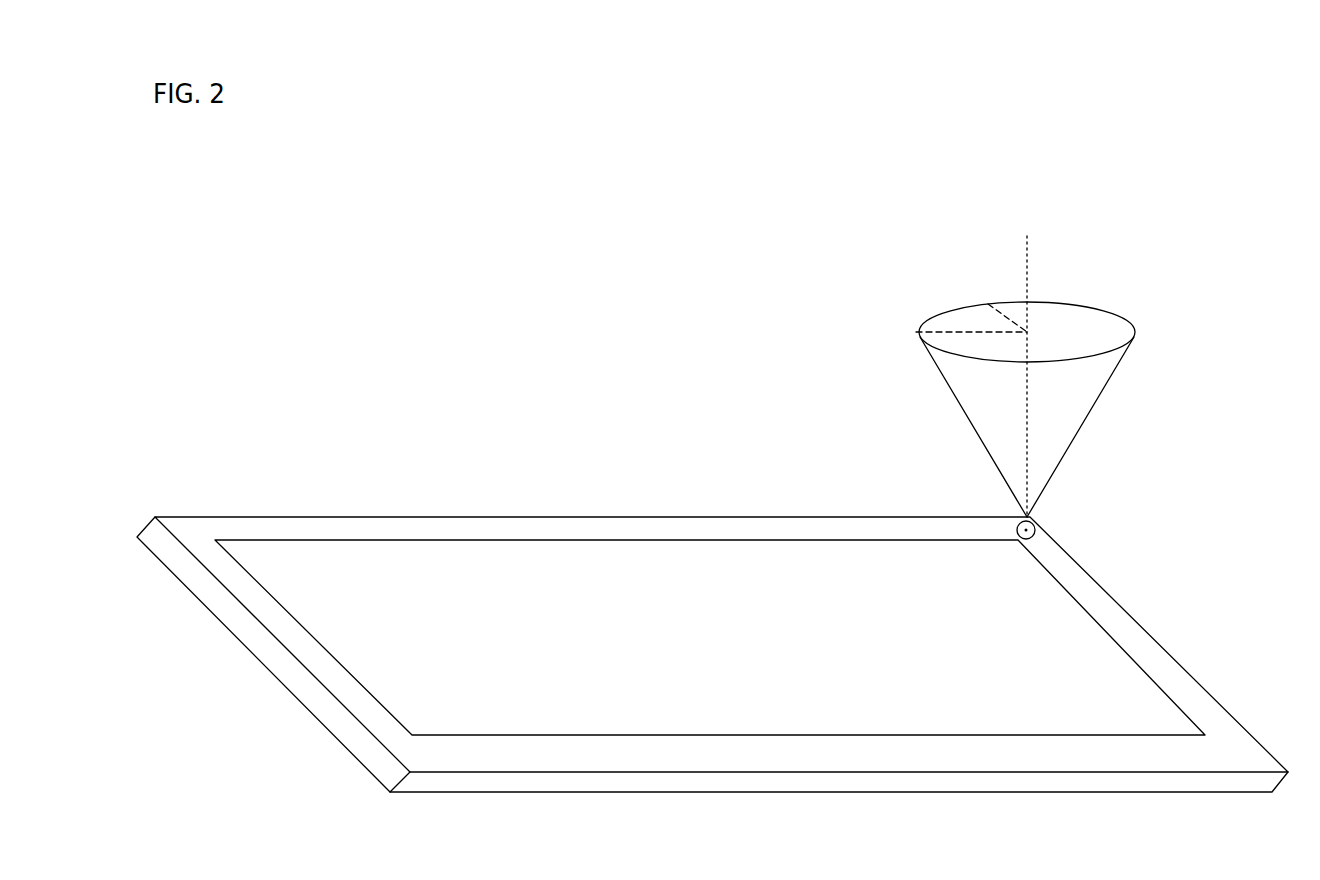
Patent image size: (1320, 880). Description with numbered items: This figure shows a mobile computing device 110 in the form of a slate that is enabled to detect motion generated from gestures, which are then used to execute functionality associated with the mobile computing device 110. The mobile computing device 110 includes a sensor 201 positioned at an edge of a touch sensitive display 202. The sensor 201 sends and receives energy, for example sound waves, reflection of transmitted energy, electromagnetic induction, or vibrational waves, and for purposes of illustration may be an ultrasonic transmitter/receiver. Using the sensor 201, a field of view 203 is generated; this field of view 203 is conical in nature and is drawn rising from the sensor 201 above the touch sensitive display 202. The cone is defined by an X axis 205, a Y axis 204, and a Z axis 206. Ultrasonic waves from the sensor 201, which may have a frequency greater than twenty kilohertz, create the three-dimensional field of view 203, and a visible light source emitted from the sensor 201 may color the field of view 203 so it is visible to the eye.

The mobile computing device 110 is at (1273, 127).
The sensor 201 is at (1140, 549).
The touch sensitive display 202 is at (708, 653).
The field of view 203 is at (1195, 424).
The Y axis 204 is at (974, 291).
The X axis 205 is at (898, 330).
The Z axis 206 is at (1024, 216).